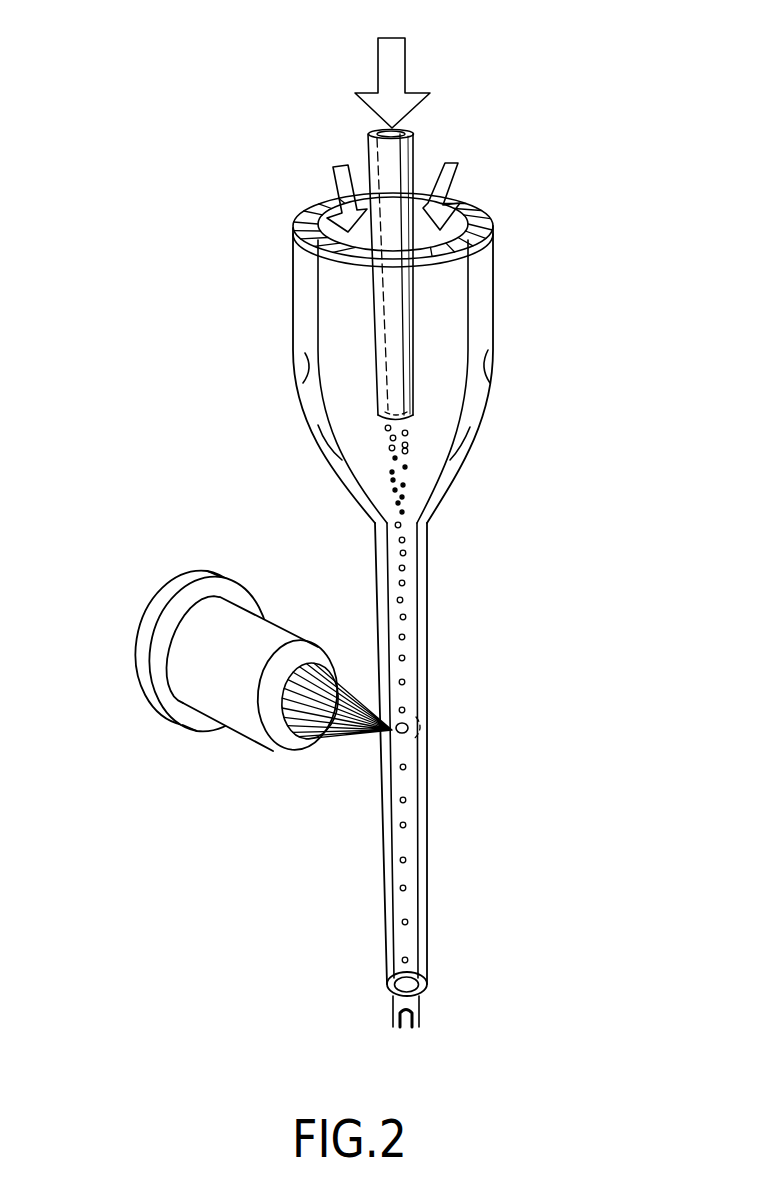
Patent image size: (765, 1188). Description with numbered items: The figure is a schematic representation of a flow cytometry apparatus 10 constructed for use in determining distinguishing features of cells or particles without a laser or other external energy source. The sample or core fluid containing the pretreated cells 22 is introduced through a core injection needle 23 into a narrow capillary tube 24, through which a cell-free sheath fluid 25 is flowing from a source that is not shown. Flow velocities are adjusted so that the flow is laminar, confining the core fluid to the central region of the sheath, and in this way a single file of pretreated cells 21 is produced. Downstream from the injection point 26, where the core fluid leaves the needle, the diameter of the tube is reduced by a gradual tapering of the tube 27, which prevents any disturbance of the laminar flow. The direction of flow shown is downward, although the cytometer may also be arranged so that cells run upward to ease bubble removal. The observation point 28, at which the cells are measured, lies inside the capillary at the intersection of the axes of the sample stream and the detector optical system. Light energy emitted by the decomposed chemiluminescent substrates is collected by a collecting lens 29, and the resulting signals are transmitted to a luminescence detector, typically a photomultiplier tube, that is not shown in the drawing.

The flow cytometer apparatus 10 is at (115, 608).
The single file of pretreated cells 21 is at (403, 636).
The core fluid containing the pretreated cells 22 is at (383, 57).
The core injection needle 23 is at (365, 137).
The capillary tube 24 is at (493, 318).
The sheath fluid 25 is at (370, 198).
The injection point 26 is at (417, 411).
The gradual tapering of the tube 27 is at (371, 522).
The observation point 28 is at (412, 736).
The collecting lens 29 is at (242, 738).